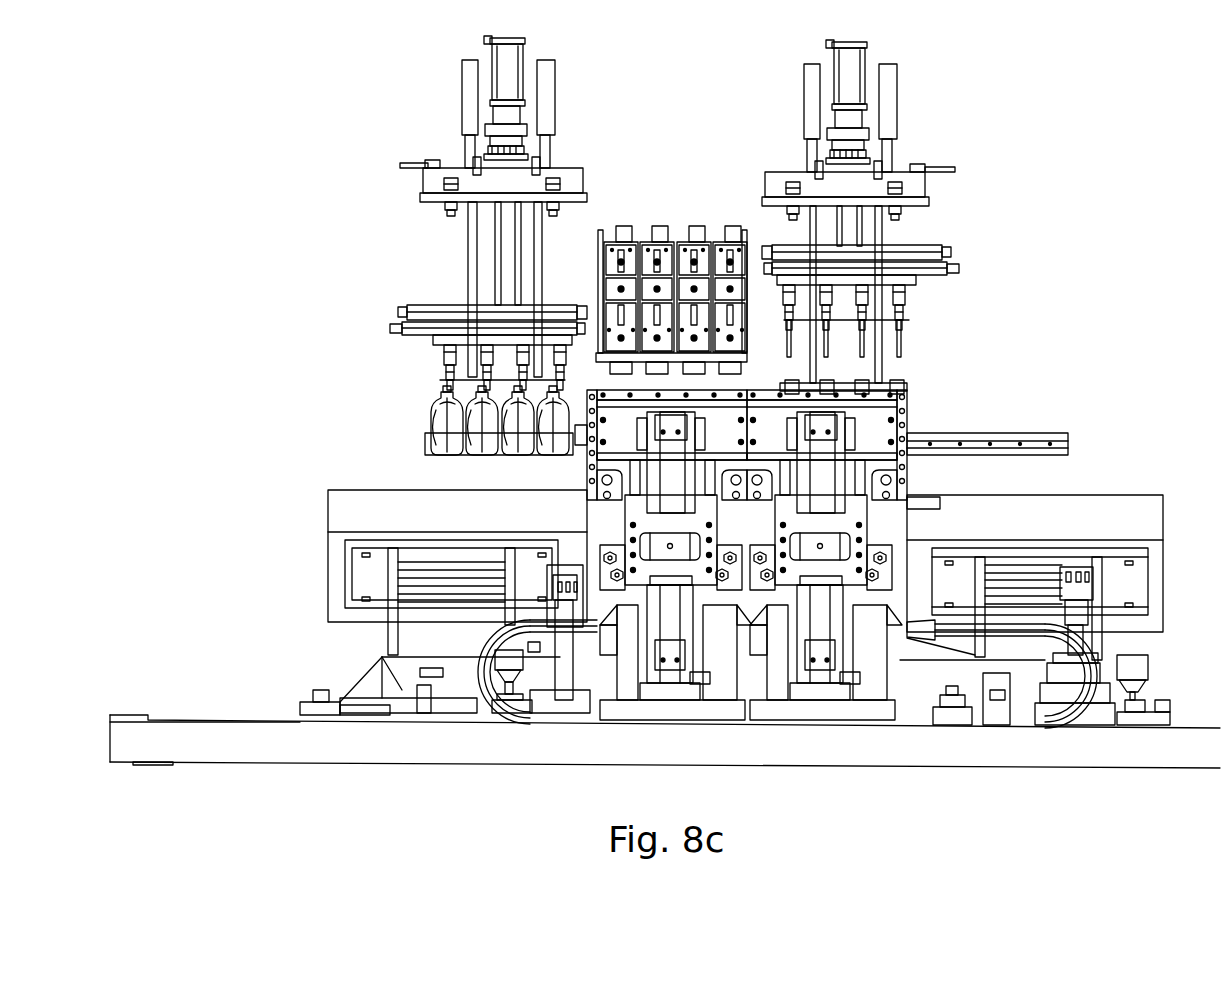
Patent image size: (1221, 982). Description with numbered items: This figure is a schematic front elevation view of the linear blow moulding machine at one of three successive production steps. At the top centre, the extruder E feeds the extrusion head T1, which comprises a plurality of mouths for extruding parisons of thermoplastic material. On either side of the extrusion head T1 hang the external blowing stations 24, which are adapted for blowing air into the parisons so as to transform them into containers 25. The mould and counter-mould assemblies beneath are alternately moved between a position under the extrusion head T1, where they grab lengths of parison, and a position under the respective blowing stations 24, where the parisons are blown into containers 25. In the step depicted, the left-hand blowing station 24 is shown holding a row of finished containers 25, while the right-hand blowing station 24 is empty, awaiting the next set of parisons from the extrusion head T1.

The extruder E is at (656, 182).
The extrusion head T1 is at (683, 212).
The blowing stations 24 is at (412, 340).
The containers 25 is at (408, 423).